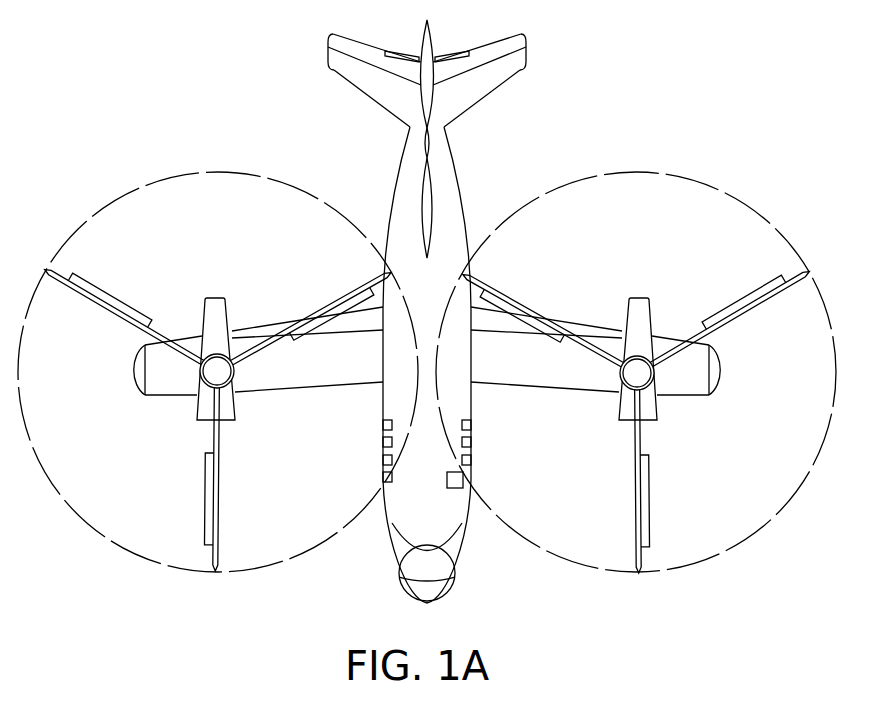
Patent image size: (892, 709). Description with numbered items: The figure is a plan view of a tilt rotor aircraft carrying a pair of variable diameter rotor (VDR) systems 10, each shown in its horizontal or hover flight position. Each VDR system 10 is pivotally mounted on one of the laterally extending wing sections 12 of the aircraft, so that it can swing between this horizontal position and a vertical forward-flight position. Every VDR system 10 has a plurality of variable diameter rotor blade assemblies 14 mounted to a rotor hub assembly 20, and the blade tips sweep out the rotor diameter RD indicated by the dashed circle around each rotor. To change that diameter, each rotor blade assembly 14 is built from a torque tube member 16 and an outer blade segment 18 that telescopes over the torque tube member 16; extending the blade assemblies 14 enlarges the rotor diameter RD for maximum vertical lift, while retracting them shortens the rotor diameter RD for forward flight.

The variable diameter rotor system 10 is at (448, 311).
The wing section 12 is at (305, 377).
The variable diameter rotor blade assembly 14 is at (426, 400).
The torque tube member 16 is at (275, 335).
The outer blade segment 18 is at (99, 293).
The rotor hub assembly 20 is at (221, 374).
The rotor diameter RD is at (688, 150).